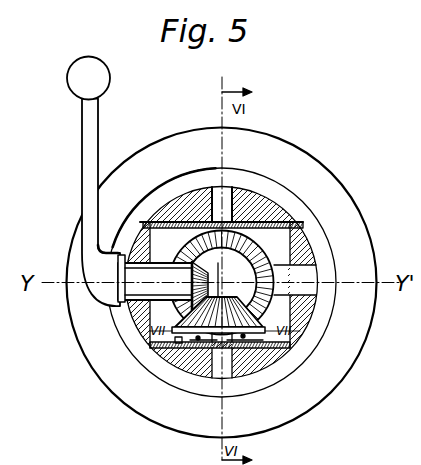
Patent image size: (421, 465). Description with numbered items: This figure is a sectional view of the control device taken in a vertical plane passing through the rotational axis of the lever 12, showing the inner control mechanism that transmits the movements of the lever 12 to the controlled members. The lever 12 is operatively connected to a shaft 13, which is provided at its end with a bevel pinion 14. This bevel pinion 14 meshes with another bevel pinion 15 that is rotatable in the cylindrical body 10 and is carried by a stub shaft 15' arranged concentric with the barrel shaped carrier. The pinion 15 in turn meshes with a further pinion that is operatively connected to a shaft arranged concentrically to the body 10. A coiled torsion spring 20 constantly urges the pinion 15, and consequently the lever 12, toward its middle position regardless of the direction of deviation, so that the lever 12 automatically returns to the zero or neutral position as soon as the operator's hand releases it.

The body 10 is at (257, 368).
The lever 12 is at (84, 131).
The shaft 13 is at (145, 273).
The bevel pinion 14 is at (207, 268).
The bevel pinion 15 is at (247, 285).
The stub shaft 15' is at (230, 382).
The coiled torsion spring 20 is at (182, 373).